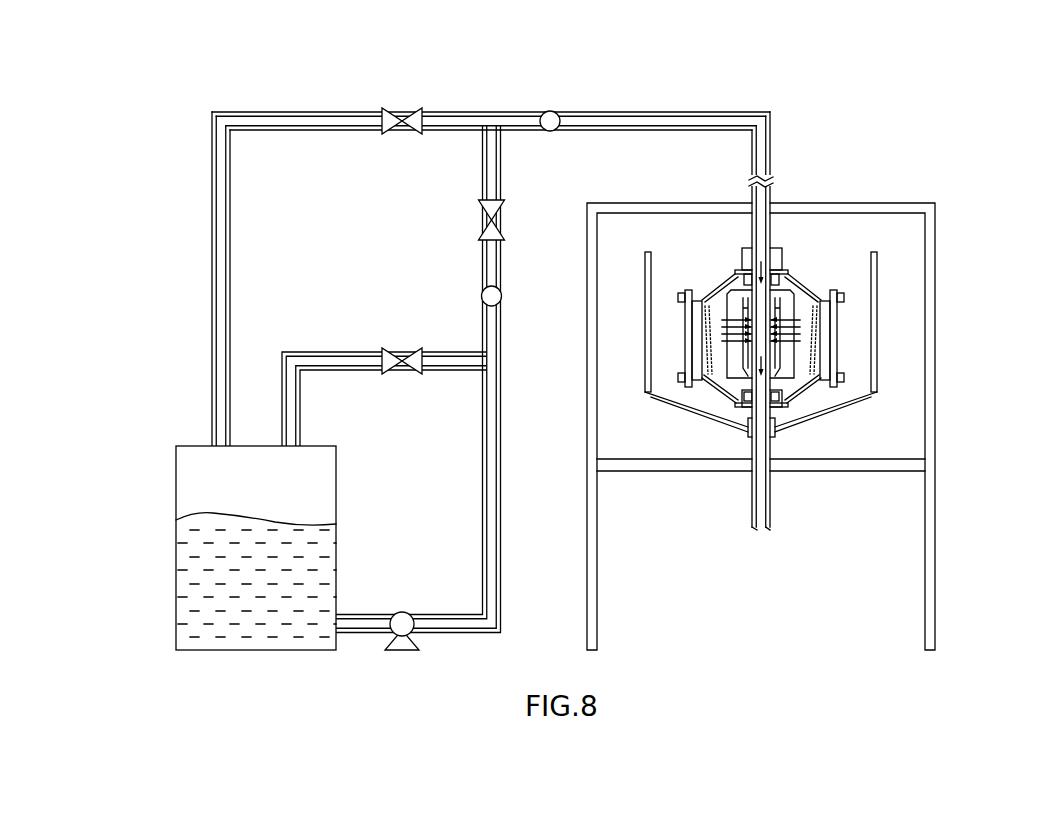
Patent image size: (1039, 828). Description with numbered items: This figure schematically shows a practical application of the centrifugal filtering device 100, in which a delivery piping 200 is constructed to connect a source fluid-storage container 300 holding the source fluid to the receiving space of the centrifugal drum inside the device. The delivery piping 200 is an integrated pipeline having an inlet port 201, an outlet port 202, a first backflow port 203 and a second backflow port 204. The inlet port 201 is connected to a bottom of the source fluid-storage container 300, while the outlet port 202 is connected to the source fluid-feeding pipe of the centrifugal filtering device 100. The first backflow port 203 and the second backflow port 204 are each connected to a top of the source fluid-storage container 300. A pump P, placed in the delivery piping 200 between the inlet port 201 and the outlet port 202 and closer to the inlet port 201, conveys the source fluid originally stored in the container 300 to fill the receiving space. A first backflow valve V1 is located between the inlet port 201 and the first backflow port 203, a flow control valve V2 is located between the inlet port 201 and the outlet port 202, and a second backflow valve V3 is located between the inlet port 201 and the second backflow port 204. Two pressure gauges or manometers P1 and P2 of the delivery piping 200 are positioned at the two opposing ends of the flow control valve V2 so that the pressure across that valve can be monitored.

The centrifugal filtering device 100 is at (892, 260).
The delivery piping 200 is at (511, 366).
The inlet port 201 is at (364, 604).
The outlet port 202 is at (780, 146).
The first backflow port 203 is at (310, 438).
The second backflow port 204 is at (201, 436).
The source fluid-storage container 300 is at (166, 584).
The first backflow valve V1 is at (408, 354).
The flow control valve V2 is at (480, 220).
The second backflow valve V3 is at (408, 114).
The pressure gauge P1 is at (502, 296).
The pressure gauge P2 is at (550, 111).
The pump P is at (406, 653).